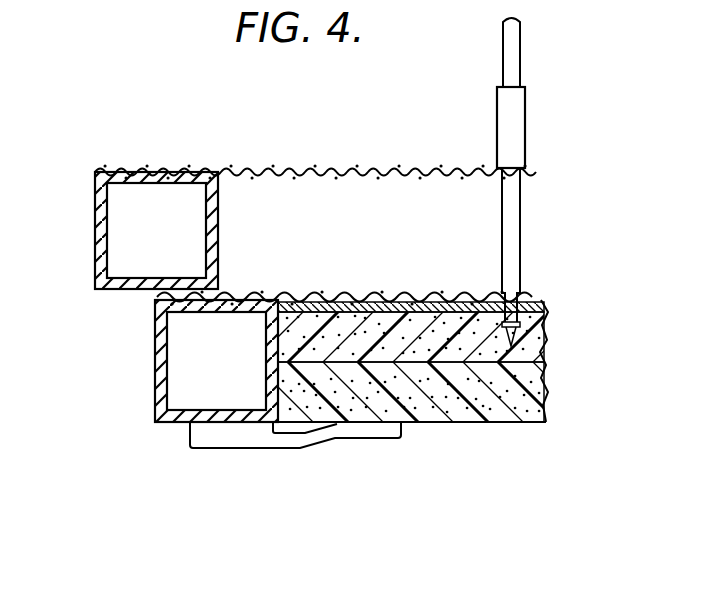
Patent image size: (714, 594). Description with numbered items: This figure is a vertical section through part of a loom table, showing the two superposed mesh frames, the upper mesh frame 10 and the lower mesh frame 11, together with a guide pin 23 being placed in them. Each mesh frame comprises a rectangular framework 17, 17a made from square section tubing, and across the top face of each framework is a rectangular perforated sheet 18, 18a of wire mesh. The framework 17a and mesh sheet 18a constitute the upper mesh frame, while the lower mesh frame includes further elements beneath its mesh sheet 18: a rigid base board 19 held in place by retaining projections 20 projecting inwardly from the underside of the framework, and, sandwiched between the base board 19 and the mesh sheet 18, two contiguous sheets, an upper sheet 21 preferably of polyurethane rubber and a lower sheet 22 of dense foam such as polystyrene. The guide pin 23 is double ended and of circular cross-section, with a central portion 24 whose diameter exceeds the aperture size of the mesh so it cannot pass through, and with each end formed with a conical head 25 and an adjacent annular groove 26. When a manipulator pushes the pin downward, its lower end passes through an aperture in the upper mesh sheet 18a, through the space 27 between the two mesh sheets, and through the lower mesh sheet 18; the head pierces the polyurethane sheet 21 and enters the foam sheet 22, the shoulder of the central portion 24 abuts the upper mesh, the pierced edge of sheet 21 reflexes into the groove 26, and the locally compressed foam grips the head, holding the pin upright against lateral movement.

The upper mesh frame 10 is at (288, 199).
The lower mesh frame 11 is at (344, 377).
The rectangular framework 17 is at (155, 358).
The rectangular framework 17a is at (96, 238).
The mesh sheet 18 is at (358, 297).
The mesh sheet 18a is at (460, 170).
The rigid base board 19 is at (520, 405).
The retaining projections 20 is at (237, 440).
The upper sheet 21 is at (538, 306).
The lower sheet 22 is at (545, 358).
The guide pin 23 is at (524, 182).
The central portion 24 is at (517, 118).
The conical head 25 is at (545, 340).
The annular groove 26 is at (500, 300).
The space 27 is at (352, 242).